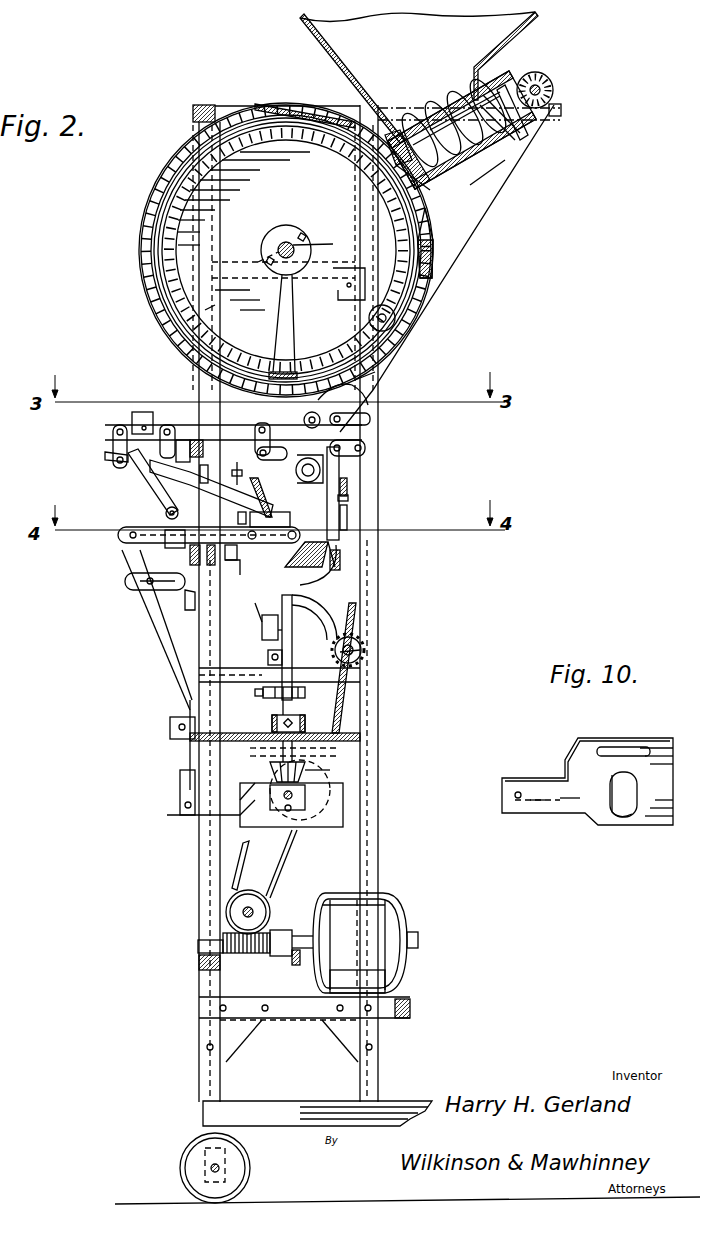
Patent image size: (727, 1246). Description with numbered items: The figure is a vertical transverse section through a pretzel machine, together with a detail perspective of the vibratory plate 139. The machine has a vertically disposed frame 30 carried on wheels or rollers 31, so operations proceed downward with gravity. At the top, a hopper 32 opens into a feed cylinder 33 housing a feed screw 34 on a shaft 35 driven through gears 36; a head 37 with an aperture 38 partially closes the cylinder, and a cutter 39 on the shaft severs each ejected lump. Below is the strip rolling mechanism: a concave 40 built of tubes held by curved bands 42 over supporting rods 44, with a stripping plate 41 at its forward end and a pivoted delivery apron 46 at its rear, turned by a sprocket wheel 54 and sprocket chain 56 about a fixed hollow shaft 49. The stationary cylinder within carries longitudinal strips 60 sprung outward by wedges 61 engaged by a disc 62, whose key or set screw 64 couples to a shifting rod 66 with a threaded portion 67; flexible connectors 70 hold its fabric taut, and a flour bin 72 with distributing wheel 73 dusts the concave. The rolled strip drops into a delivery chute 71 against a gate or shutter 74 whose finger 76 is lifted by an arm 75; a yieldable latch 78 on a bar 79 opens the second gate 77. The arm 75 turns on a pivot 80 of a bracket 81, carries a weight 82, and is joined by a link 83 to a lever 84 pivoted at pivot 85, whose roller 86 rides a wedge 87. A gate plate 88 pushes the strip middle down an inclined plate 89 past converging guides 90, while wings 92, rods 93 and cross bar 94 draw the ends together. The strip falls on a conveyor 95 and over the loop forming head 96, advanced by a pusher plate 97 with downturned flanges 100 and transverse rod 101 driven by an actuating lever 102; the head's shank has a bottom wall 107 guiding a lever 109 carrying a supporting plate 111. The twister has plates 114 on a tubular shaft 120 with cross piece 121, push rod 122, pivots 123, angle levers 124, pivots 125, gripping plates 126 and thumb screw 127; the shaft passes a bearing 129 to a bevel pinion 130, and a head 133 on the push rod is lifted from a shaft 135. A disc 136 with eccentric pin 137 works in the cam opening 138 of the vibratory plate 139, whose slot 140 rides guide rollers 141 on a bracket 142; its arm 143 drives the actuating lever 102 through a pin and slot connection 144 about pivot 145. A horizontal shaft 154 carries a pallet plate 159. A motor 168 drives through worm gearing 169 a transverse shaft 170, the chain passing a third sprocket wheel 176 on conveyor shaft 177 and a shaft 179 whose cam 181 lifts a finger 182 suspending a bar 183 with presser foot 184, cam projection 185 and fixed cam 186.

In FIG. 2, the frame 30 is at (565, 106).
In FIG. 2, the wheels or rollers 31 is at (180, 1148).
In FIG. 2, the hopper 32 is at (310, 34).
In FIG. 2, the feed cylinder 33 is at (530, 140).
In FIG. 2, the feed screw 34 is at (505, 150).
In FIG. 2, the shaft 35 is at (492, 105).
In FIG. 2, the gears 36 is at (560, 104).
In FIG. 2, the head 37 is at (415, 140).
In FIG. 2, the aperture 38 is at (430, 180).
In FIG. 2, the cutter 39 is at (500, 178).
In FIG. 2, the concave 40 is at (150, 258).
In FIG. 2, the stripping plate 41 is at (435, 240).
In FIG. 2, the curved bands 42 is at (150, 290).
In FIG. 2, the rods 44 is at (160, 178).
In FIG. 2, the delivery apron 46 is at (326, 118).
In FIG. 2, the hollow shaft 49 is at (295, 238).
In FIG. 2, the sprocket wheel 54 is at (536, 72).
In FIG. 2, the sprocket chain 56 is at (495, 205).
In FIG. 2, the longitudinal strips 60 is at (175, 248).
In FIG. 2, the wedges 61 is at (342, 150).
In FIG. 2, the disc 62 is at (290, 200).
In FIG. 2, the key or set screw 64 is at (265, 268).
In FIG. 2, the shifting rod 66 is at (280, 245).
In FIG. 2, the threaded portion 67 is at (202, 330).
In FIG. 2, the flexible connectors 70 is at (292, 340).
In FIG. 2, the delivery chute 71 is at (380, 388).
In FIG. 2, the flour bin 72 is at (338, 283).
In FIG. 2, the distributing wheel 73 is at (368, 322).
In FIG. 2, the gate or shutter 74 is at (372, 419).
In FIG. 2, the arm 75 is at (112, 425).
In FIG. 2, the finger 76 is at (322, 372).
In FIG. 2, the second gate 77 is at (306, 425).
In FIG. 2, the yieldable latch 78 is at (257, 455).
In FIG. 2, the bar 79 is at (258, 424).
In FIG. 2, the pivot 80 is at (172, 425).
In FIG. 2, the bracket 81 is at (168, 425).
In FIG. 2, the weight 82 is at (138, 412).
In FIG. 2, the link 83 is at (112, 432).
In FIG. 2, the lever 84 is at (105, 455).
In FIG. 2, the pivot 85 is at (165, 500).
In FIG. 2, the roller 86 is at (165, 513).
In FIG. 2, the wedge 87 is at (185, 556).
In FIG. 2, the gate plate 88 is at (234, 472).
In FIG. 2, the inclined plate 89 is at (211, 489).
In FIG. 2, the converging guides 90 is at (292, 518).
In FIG. 2, the wings 92 is at (228, 575).
In FIG. 2, the rods 93 is at (218, 554).
In FIG. 2, the cross bar 94 is at (214, 478).
In FIG. 2, the conveyor 95 is at (300, 540).
In FIG. 2, the loop forming head 96 is at (322, 547).
In FIG. 2, the pusher plate 97 is at (234, 518).
In FIG. 2, the downturned flanges 100 is at (125, 548).
In FIG. 2, the transverse rod 101 is at (130, 540).
In FIG. 2, the actuating lever 102 is at (162, 658).
In FIG. 2, the bottom wall 107 is at (200, 600).
In FIG. 2, the lever 109 is at (135, 585).
In FIG. 2, the supporting plate 111 is at (330, 590).
In FIG. 2, the plates 114 is at (255, 641).
In FIG. 2, the tubular shaft 120 is at (308, 704).
In FIG. 2, the cross piece 121 is at (280, 700).
In FIG. 2, the push rod 122 is at (330, 782).
In FIG. 2, the pivots 123 is at (268, 657).
In FIG. 2, the angle levers 124 is at (292, 665).
In FIG. 2, the pivots 125 is at (306, 692).
In FIG. 2, the gripping plates 126 is at (282, 600).
In FIG. 2, the thumb screw 127 is at (255, 692).
In FIG. 2, the bearing 129 is at (272, 724).
In FIG. 2, the bevel pinion 130 is at (306, 770).
In FIG. 2, the head 133 is at (275, 780).
In FIG. 2, the shaft 135 is at (284, 795).
In FIG. 2, the disc 136 is at (300, 835).
In FIG. 2, the eccentric pin 137 is at (290, 832).
In FIG. 2, the cam opening 138 is at (290, 798).
In FIG. 10, the cam opening 138 is at (628, 815).
In FIG. 2, the vibratory plate 139 is at (345, 820).
In FIG. 10, the vibratory plate 139 is at (668, 812).
In FIG. 10, the slot 140 is at (636, 750).
In FIG. 2, the guide rollers 141 is at (280, 762).
In FIG. 2, the bracket 142 is at (345, 748).
In FIG. 2, the arm 143 is at (180, 815).
In FIG. 10, the arm 143 is at (543, 802).
In FIG. 2, the pin and slot connection 144 is at (178, 806).
In FIG. 2, the pivot 145 is at (170, 728).
In FIG. 2, the horizontal shaft 154 is at (244, 612).
In FIG. 2, the pallet plate 159 is at (262, 628).
In FIG. 2, the motor 168 is at (400, 915).
In FIG. 2, the worm gearing 169 is at (255, 955).
In FIG. 2, the transverse shaft 170 is at (245, 915).
In FIG. 2, the third sprocket wheel 176 is at (355, 645).
In FIG. 2, the conveyor shaft 177 is at (362, 655).
In FIG. 2, the shaft 179 is at (322, 472).
In FIG. 2, the cam 181 is at (340, 465).
In FIG. 2, the finger 182 is at (366, 448).
In FIG. 2, the bar 183 is at (338, 513).
In FIG. 2, the presser foot 184 is at (340, 572).
In FIG. 2, the cam projection 185 is at (348, 486).
In FIG. 2, the cam 186 is at (349, 496).